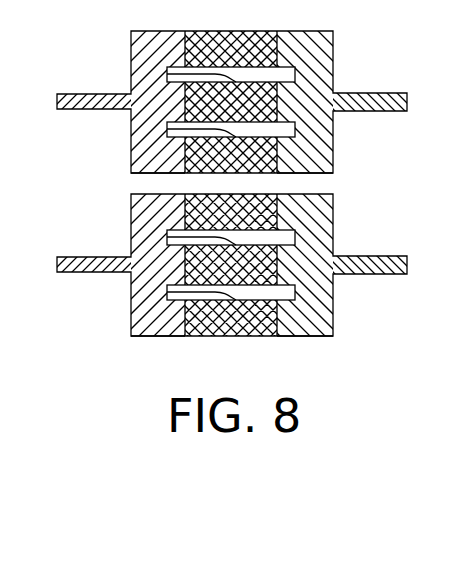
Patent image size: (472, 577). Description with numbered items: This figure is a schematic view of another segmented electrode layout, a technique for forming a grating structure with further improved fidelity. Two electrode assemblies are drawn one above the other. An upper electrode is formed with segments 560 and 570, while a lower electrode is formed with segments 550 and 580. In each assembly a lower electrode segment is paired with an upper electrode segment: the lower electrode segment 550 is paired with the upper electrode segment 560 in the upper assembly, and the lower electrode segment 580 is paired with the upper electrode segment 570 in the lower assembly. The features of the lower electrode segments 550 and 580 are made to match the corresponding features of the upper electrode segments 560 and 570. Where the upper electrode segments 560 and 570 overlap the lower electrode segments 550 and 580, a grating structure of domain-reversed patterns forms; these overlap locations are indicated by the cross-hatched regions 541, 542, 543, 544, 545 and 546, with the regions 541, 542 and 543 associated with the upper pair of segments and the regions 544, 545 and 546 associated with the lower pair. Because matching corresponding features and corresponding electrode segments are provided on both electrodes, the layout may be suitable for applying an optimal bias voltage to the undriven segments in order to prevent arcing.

The lower electrode segment 550 is at (130, 55).
The upper electrode segment 560 is at (333, 63).
The cross-hatched region 541 is at (167, 74).
The cross-hatched region 542 is at (167, 129).
The cross-hatched region 543 is at (235, 173).
The lower electrode segment 580 is at (130, 218).
The upper electrode segment 570 is at (333, 227).
The cross-hatched region 544 is at (167, 237).
The cross-hatched region 545 is at (167, 292).
The cross-hatched region 546 is at (235, 336).